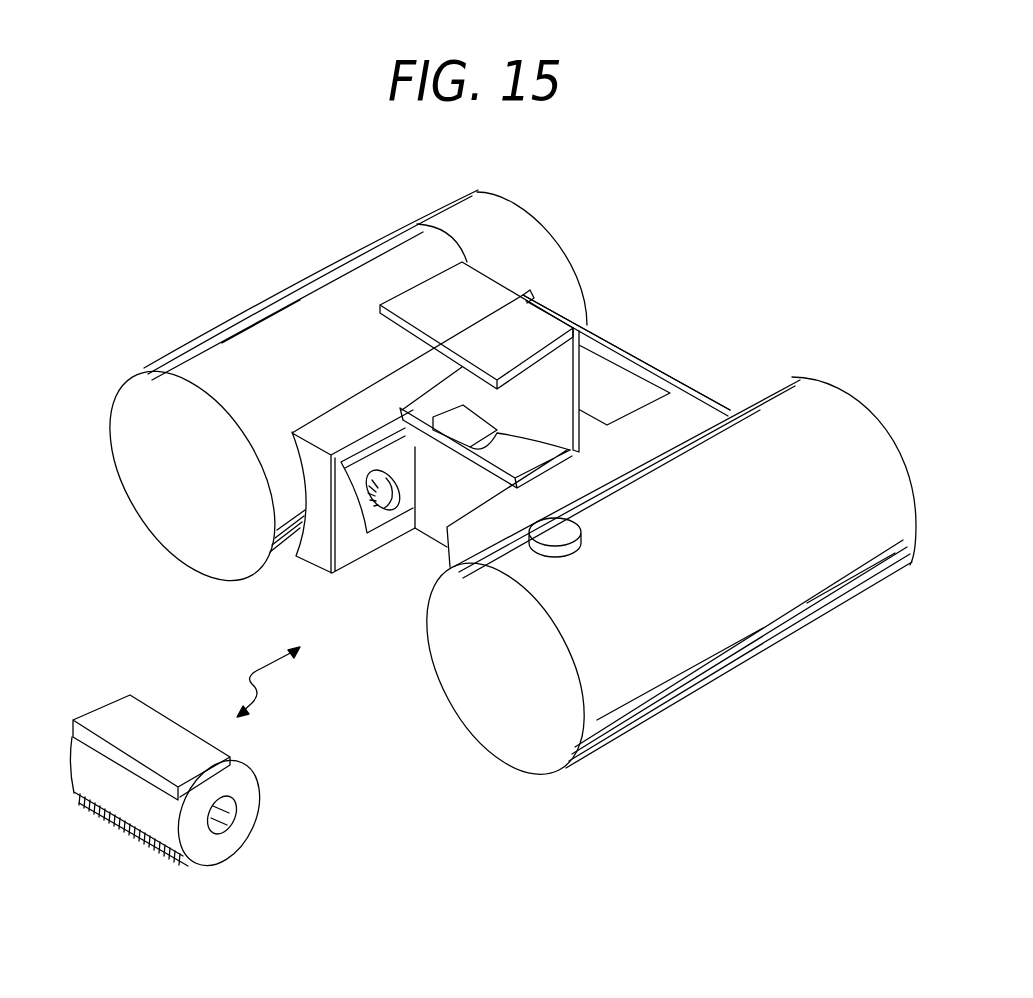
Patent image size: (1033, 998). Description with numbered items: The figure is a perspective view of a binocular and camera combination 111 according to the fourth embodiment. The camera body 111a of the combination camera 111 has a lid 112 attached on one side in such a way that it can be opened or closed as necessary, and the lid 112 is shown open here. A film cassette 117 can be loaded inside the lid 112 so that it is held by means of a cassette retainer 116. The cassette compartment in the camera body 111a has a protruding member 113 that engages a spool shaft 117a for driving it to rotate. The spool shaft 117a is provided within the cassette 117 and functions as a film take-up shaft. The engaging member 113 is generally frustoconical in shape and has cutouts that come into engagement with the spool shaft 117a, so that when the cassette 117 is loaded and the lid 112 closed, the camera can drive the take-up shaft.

The binocular and camera combination 111 is at (830, 388).
The camera body 111a is at (703, 391).
The lid 112 is at (419, 223).
The protruding member 113 is at (380, 516).
The cassette retainer 116 is at (577, 450).
The film cassette 117 is at (262, 806).
The spool shaft 117a is at (230, 832).